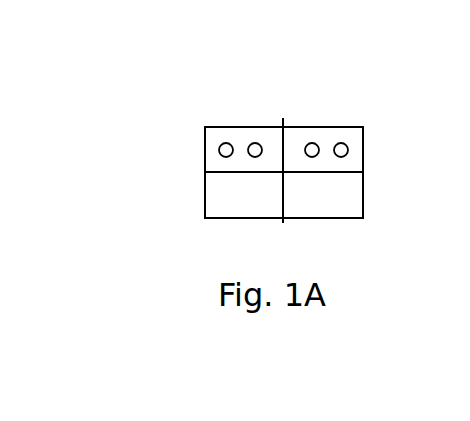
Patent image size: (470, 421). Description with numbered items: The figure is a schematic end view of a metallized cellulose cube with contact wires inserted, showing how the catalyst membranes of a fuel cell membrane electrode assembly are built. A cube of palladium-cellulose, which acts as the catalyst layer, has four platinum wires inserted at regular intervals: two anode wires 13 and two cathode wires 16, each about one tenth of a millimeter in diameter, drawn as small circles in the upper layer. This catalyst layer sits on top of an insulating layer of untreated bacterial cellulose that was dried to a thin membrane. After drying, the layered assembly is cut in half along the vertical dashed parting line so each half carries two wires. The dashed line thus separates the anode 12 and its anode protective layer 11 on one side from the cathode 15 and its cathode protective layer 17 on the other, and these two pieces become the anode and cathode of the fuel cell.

The anode protective layer 11 is at (384, 198).
The anode 12 is at (385, 148).
The anode wires 13 is at (309, 116).
The cathode 15 is at (185, 152).
The cathode wires 16 is at (249, 114).
The cathode protective layer 17 is at (185, 197).